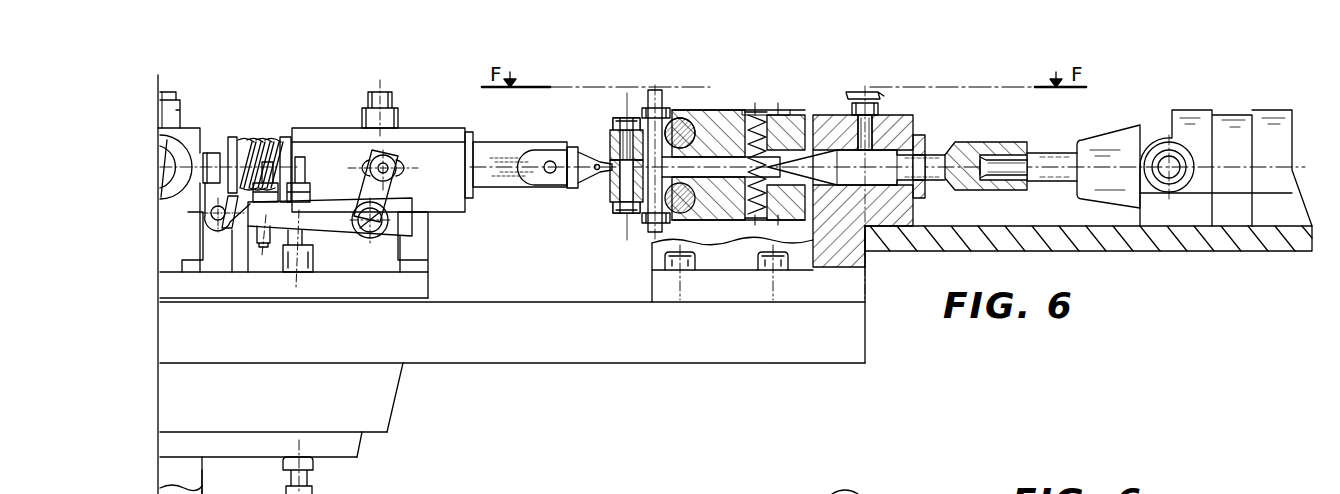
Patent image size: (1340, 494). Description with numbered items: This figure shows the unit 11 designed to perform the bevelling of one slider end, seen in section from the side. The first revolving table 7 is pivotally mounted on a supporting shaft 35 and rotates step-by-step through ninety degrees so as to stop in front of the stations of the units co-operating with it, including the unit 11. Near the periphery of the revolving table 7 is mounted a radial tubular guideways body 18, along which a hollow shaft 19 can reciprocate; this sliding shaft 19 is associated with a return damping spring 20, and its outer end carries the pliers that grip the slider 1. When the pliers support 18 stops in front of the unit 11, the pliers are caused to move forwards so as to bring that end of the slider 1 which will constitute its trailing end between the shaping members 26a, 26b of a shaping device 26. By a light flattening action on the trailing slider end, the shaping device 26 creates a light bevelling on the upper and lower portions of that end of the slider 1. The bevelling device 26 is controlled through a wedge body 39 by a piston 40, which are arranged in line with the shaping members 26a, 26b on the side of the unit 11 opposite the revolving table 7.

The slider 1 is at (604, 170).
The revolving table 7 is at (490, 300).
The unit 11 is at (777, 108).
The tubular guideways body 18 is at (443, 195).
The hollow shaft 19 is at (498, 178).
The return damping spring 20 is at (254, 138).
The shaping device 26 is at (703, 107).
The shaping member 26a is at (610, 133).
The shaping member 26b is at (612, 200).
The supporting shaft 35 is at (195, 481).
The wedge body 39 is at (886, 162).
The piston 40 is at (1000, 141).